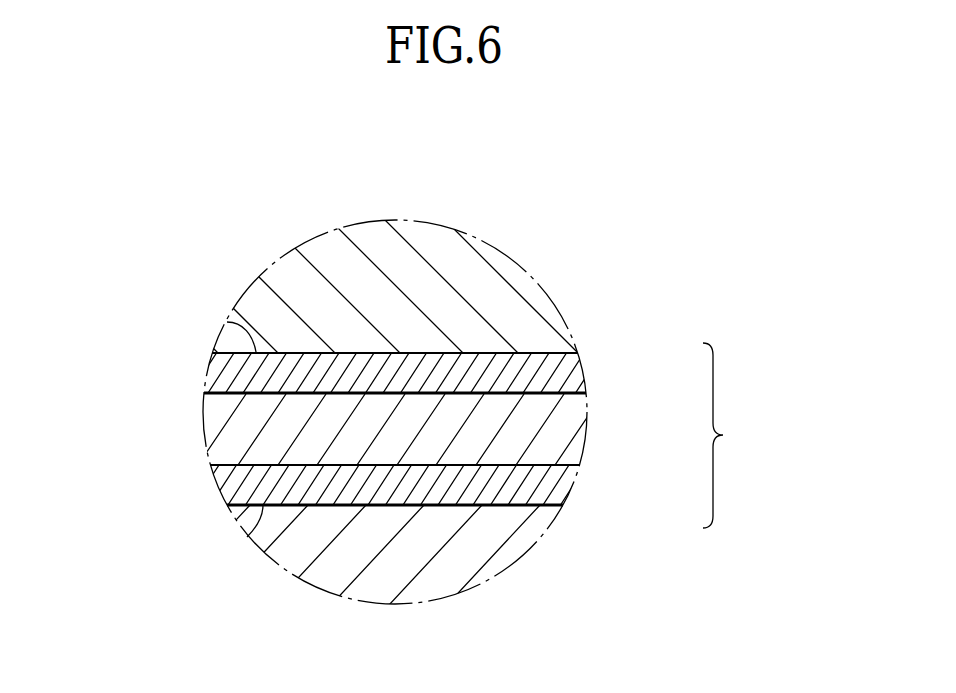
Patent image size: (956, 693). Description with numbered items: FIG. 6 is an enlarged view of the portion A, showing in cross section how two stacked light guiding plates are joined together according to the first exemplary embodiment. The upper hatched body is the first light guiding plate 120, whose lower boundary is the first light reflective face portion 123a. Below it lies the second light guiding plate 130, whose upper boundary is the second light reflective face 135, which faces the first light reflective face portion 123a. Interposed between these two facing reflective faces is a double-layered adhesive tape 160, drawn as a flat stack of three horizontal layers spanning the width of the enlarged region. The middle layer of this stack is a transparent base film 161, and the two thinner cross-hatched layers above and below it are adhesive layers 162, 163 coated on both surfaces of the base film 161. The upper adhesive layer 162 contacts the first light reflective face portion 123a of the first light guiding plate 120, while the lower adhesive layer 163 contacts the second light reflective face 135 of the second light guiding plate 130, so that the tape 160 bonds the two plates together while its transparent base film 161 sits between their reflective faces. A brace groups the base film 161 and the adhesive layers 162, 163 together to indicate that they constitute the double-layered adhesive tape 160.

The first light guiding plate 120 is at (480, 287).
The first light reflective face portion 123a is at (227, 322).
The second light guiding plate 130 is at (468, 548).
The second light reflective face 135 is at (247, 537).
The double-layered adhesive tape 160 is at (738, 435).
The transparent base film 161 is at (562, 435).
The adhesive layer 162 is at (580, 374).
The adhesive layer 163 is at (568, 492).
The portion A is at (545, 288).